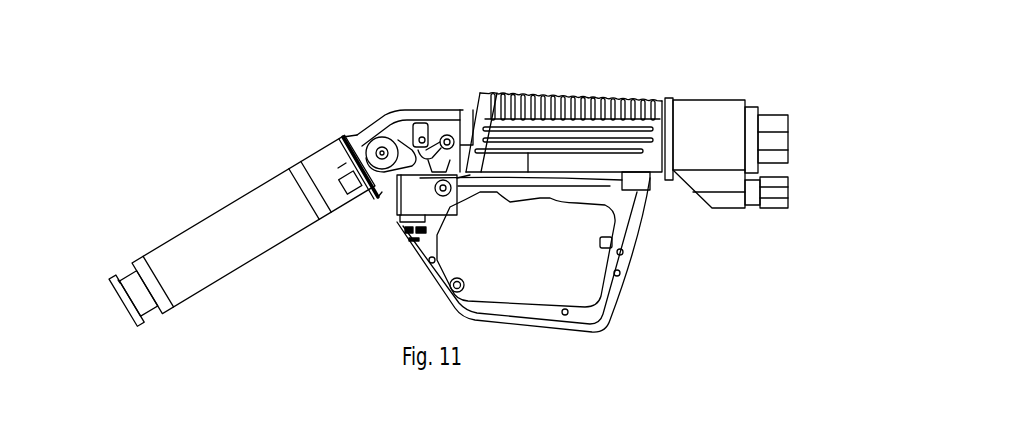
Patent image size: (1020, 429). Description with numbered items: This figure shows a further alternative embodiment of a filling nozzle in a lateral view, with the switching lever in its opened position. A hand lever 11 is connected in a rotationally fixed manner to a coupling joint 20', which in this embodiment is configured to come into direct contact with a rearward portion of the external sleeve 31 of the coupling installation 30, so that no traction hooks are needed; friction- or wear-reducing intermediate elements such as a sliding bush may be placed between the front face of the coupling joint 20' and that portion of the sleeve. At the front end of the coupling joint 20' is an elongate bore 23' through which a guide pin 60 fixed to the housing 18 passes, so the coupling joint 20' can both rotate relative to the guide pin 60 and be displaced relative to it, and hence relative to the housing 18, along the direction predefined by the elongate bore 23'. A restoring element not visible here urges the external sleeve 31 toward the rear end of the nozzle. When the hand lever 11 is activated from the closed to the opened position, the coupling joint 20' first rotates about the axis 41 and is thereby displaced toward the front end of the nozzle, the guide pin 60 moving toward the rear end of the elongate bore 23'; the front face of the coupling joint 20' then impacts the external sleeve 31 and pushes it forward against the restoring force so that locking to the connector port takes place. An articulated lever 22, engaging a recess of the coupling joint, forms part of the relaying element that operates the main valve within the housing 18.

The coupling installation 30 is at (226, 128).
The external sleeve 31 is at (241, 231).
The guide pin 60 is at (357, 137).
The housing 18 is at (400, 130).
The coupling joint 20' is at (417, 98).
The articulated lever 22 is at (417, 122).
The elongate bore 23' is at (364, 207).
The axis 41 is at (425, 177).
The hand lever 11 is at (510, 191).